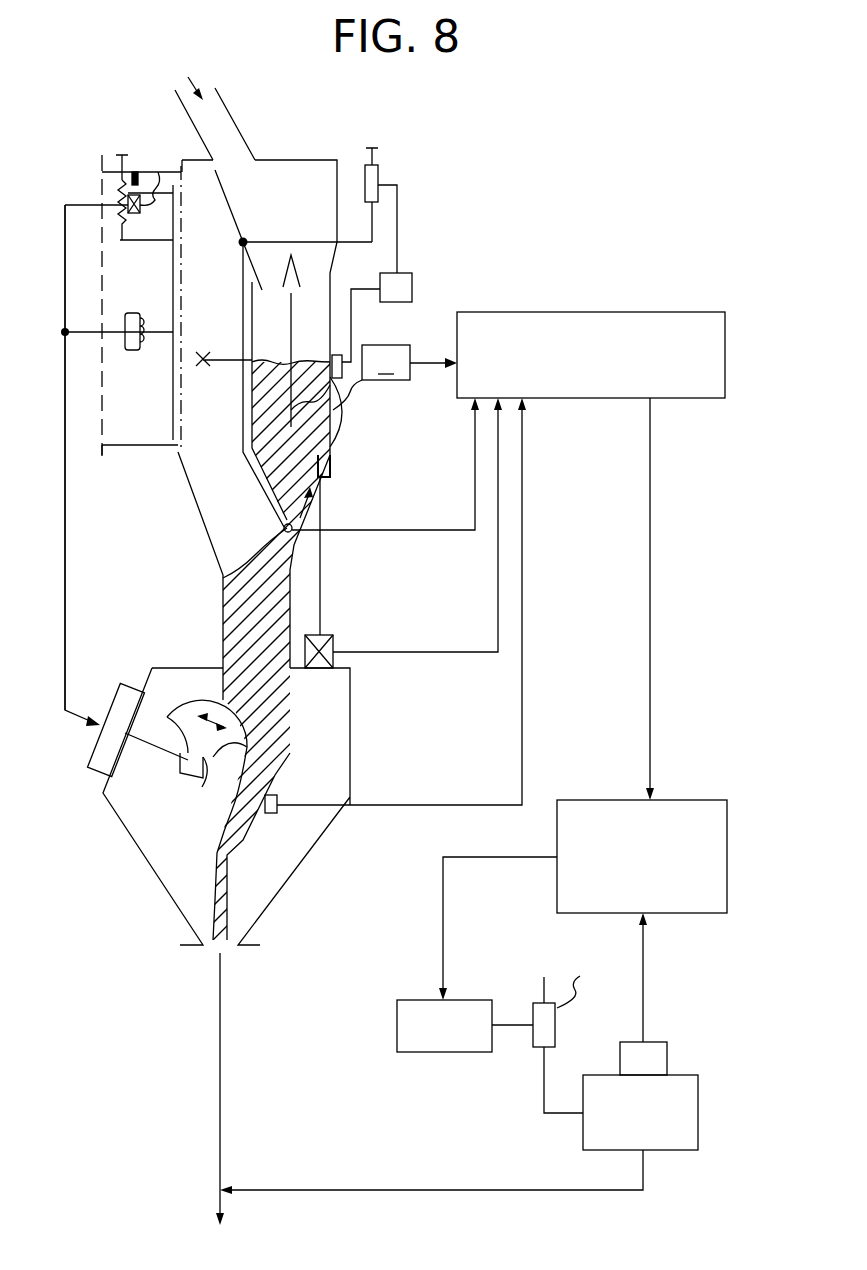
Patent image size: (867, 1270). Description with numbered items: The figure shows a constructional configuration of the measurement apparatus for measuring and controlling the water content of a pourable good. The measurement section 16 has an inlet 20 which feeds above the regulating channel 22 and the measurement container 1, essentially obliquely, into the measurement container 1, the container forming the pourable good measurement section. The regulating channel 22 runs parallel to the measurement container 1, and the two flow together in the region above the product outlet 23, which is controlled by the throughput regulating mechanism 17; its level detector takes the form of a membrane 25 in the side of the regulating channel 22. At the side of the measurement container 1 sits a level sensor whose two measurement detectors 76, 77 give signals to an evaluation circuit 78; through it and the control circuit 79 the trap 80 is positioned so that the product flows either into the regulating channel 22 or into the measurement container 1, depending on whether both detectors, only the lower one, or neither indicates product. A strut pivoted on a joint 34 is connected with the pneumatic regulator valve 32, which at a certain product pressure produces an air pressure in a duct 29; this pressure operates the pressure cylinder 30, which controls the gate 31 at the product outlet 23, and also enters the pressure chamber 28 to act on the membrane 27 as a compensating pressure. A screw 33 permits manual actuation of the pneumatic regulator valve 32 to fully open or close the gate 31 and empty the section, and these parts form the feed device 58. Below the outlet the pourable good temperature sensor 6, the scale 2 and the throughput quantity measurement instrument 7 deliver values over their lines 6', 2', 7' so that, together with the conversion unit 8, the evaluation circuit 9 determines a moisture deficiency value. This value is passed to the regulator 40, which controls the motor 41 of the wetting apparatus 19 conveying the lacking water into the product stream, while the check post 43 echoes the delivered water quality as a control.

The measurement container 1 is at (318, 294).
The scale 2 is at (337, 646).
The valve signal line 2' is at (417, 525).
The pourable good temperature sensor 6 is at (317, 509).
The sensor signal line 6' is at (385, 464).
The throughput quantity measurement instrument 7 is at (269, 831).
The sensor signal line 7' is at (401, 601).
The conversion unit 8 is at (378, 382).
The evaluation circuit 9 is at (615, 312).
The measurement section 16 is at (290, 161).
The throughput regulating mechanism 17 is at (160, 648).
The wetting apparatus 19 is at (533, 1036).
The inlet 20 is at (218, 96).
The regulating channel 22 is at (192, 170).
The product outlet 23 is at (240, 620).
The membrane 25 is at (178, 447).
The membrane 27 is at (160, 302).
The pressure chamber 28 is at (134, 352).
The duct 29 is at (66, 550).
The pressure cylinder 30 is at (122, 685).
The gate 31 is at (200, 785).
The pneumatic regulator valve 32 is at (138, 215).
The screw 33 is at (122, 155).
The joint 34 is at (119, 203).
The regulator 40 is at (710, 800).
The motor 41 is at (452, 1007).
The check post 43 is at (685, 1075).
The feed device 58 is at (162, 566).
The measurement detector 76 is at (338, 435).
The measurement detector 77 is at (340, 355).
The evaluation circuit 78 is at (398, 290).
The control circuit 79 is at (380, 178).
The trap 80 is at (226, 184).